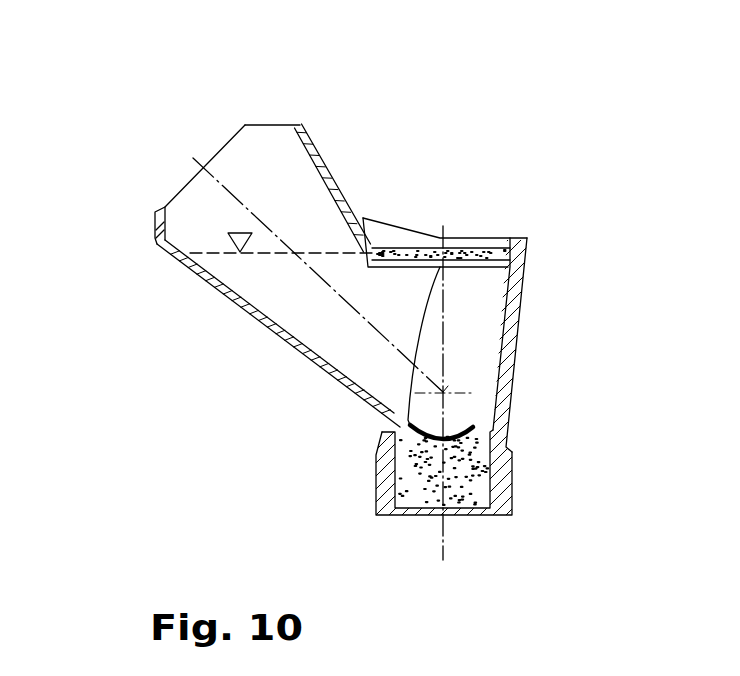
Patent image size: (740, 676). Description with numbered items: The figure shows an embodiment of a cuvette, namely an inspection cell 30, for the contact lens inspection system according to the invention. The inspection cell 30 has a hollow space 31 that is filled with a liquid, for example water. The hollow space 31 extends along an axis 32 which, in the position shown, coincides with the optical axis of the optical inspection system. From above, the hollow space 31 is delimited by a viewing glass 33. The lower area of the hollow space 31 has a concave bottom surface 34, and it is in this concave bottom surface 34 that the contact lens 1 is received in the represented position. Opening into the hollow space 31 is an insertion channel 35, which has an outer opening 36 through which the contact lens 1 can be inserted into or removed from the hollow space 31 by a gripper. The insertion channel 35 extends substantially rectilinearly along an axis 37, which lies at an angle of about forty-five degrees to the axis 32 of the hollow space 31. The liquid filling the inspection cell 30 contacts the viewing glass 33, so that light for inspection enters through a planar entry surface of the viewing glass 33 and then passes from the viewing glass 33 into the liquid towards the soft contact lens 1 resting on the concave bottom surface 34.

The inspection cell 30 is at (188, 415).
The hollow space 31 is at (478, 298).
The axis 32 is at (445, 349).
The viewing glass 33 is at (463, 252).
The concave bottom surface 34 is at (473, 443).
The insertion channel 35 is at (290, 210).
The outer opening 36 is at (228, 155).
The axis 37 is at (323, 283).
The contact lens 1 is at (408, 424).